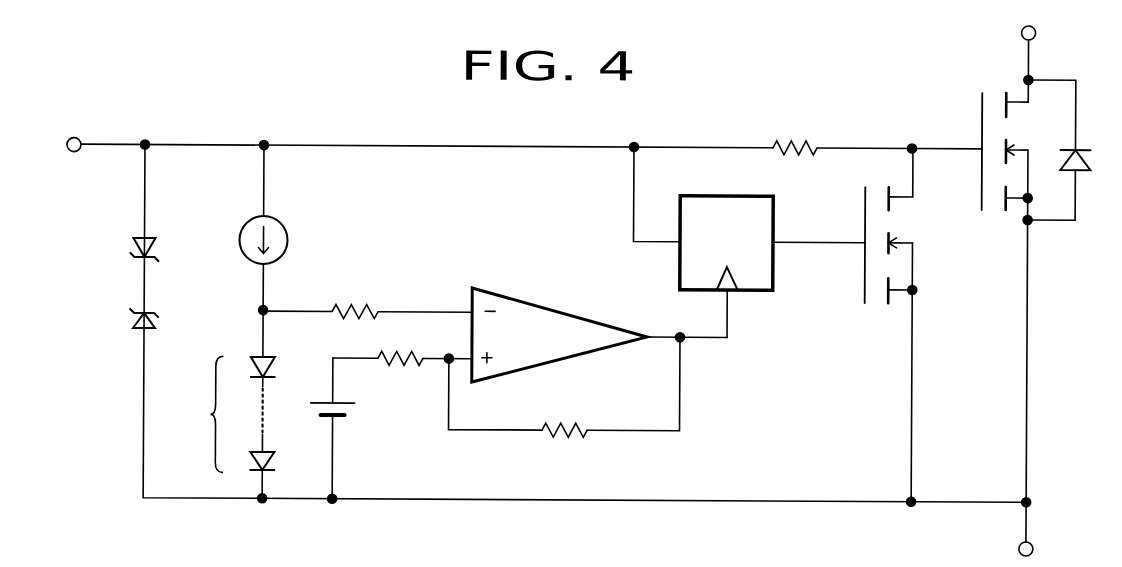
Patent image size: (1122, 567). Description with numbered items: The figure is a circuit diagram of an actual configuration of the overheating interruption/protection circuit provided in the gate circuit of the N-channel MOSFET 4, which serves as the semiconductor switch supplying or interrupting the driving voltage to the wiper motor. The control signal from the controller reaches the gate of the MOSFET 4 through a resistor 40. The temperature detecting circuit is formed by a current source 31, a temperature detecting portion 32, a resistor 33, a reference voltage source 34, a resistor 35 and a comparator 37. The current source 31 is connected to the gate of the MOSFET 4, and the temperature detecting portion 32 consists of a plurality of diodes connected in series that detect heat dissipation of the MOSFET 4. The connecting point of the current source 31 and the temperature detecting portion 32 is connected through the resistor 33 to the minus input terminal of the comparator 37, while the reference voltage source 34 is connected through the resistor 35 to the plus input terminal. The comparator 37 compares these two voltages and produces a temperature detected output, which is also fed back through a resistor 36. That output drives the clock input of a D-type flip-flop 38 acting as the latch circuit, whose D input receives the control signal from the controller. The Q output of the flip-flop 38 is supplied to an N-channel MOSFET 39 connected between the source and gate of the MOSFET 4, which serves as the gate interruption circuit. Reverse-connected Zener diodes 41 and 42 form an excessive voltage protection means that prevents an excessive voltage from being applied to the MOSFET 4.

The N-channel MOSFET 4 is at (993, 80).
The current source 31 is at (278, 223).
The temperature detecting portion 32 is at (218, 404).
The resistor 33 is at (349, 295).
The reference voltage source 34 is at (345, 417).
The resistor 35 is at (405, 349).
The feedback resistor 36 is at (558, 437).
The comparator 37 is at (604, 322).
The D-type flip-flop 38 is at (731, 193).
The N-channel MOSFET 39 is at (878, 303).
The resistor 40 is at (783, 135).
The Zener diode 41 is at (137, 235).
The Zener diode 42 is at (138, 331).